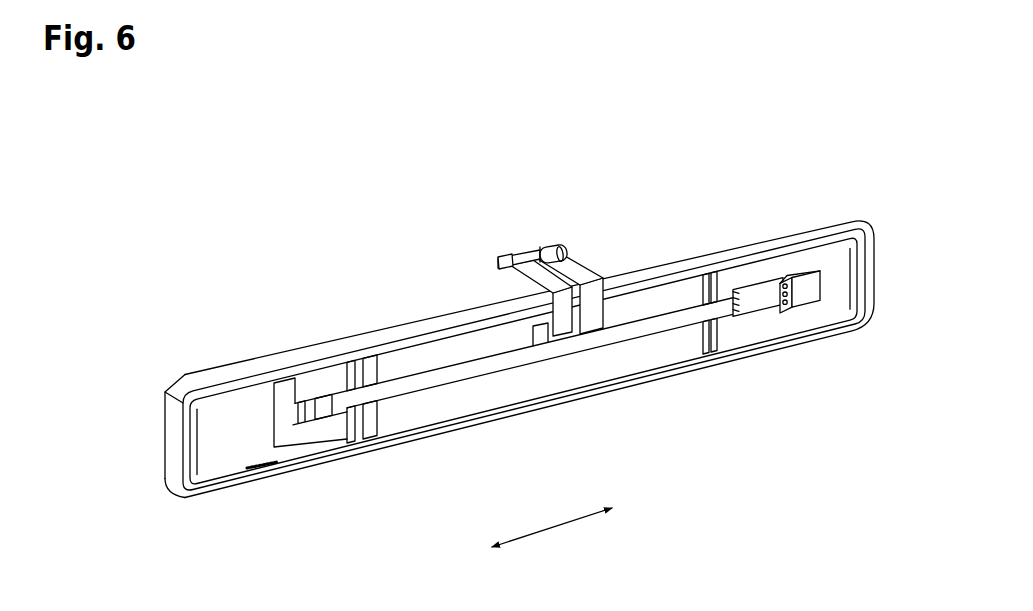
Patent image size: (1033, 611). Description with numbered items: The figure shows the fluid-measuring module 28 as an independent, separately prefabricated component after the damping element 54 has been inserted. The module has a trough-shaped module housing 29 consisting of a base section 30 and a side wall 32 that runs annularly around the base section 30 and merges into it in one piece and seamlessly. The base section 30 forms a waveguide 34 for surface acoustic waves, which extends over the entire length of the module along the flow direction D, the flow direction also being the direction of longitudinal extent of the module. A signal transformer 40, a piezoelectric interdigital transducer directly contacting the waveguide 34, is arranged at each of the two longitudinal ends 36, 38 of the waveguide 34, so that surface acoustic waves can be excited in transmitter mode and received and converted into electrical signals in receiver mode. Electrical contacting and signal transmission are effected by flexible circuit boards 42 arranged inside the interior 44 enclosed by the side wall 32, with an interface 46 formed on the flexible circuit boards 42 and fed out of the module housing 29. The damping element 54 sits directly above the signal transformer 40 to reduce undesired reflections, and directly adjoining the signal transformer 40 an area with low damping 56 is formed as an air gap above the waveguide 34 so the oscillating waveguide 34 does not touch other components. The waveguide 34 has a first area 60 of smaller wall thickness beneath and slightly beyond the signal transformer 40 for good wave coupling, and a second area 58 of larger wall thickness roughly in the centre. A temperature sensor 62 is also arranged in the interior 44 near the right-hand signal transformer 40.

The fluid-measuring module 28 is at (488, 351).
The module housing 29 is at (180, 494).
The base section 30 is at (314, 432).
The side wall 32 is at (177, 437).
The waveguide 34 is at (732, 286).
The longitudinal end 36 is at (132, 378).
The longitudinal end 38 is at (894, 220).
The signal transformer 40 is at (291, 420).
The flexible circuit board 42 is at (470, 372).
The interior 44 is at (668, 348).
The interface 46 is at (560, 246).
The damping element 54 is at (228, 412).
The area with low damping 56 is at (292, 380).
The second area 58 is at (445, 348).
The first area 60 is at (329, 372).
The temperature sensor 62 is at (810, 292).